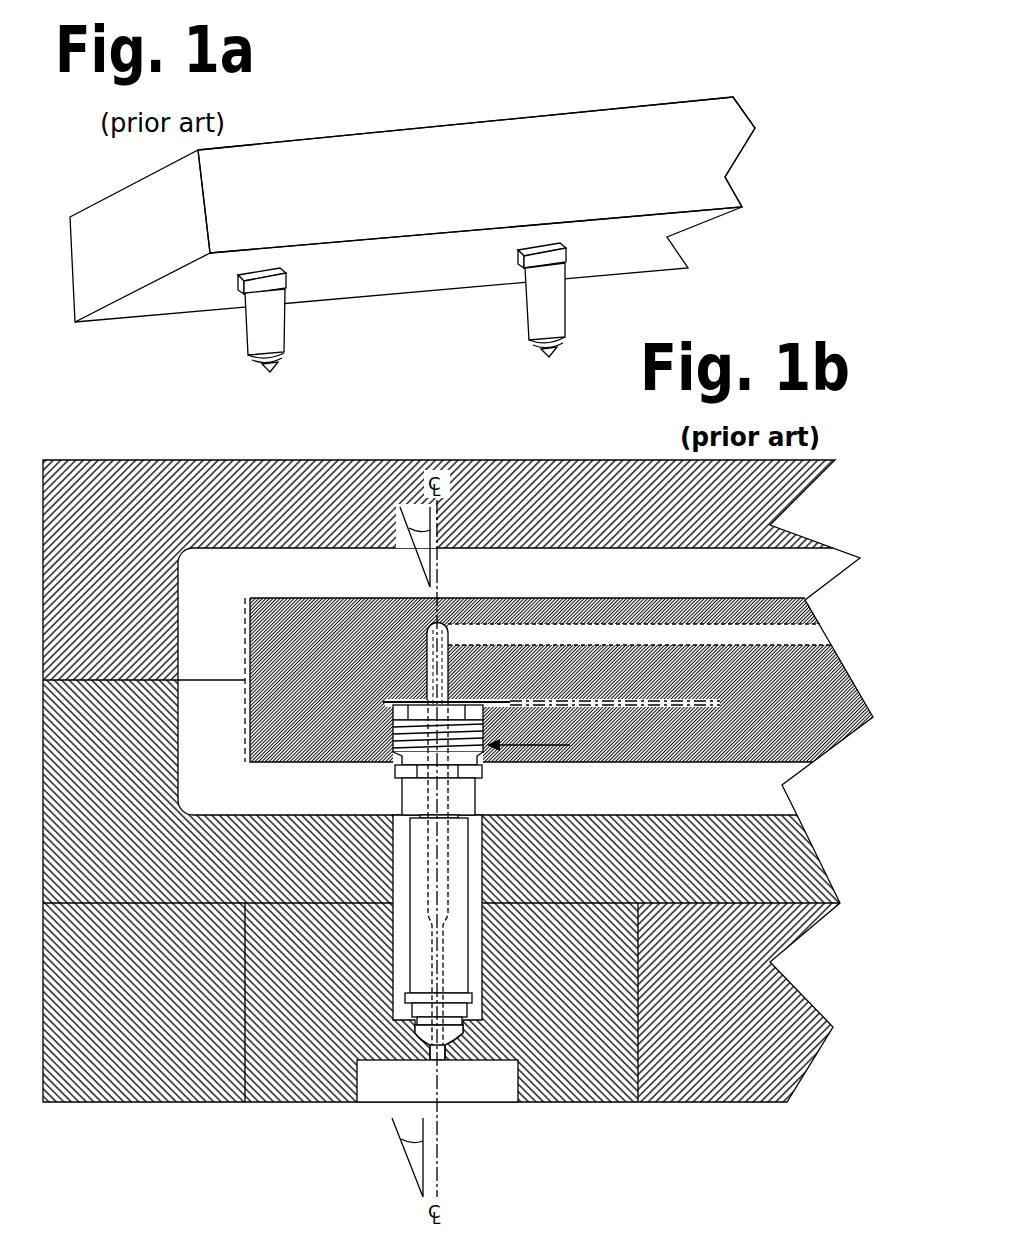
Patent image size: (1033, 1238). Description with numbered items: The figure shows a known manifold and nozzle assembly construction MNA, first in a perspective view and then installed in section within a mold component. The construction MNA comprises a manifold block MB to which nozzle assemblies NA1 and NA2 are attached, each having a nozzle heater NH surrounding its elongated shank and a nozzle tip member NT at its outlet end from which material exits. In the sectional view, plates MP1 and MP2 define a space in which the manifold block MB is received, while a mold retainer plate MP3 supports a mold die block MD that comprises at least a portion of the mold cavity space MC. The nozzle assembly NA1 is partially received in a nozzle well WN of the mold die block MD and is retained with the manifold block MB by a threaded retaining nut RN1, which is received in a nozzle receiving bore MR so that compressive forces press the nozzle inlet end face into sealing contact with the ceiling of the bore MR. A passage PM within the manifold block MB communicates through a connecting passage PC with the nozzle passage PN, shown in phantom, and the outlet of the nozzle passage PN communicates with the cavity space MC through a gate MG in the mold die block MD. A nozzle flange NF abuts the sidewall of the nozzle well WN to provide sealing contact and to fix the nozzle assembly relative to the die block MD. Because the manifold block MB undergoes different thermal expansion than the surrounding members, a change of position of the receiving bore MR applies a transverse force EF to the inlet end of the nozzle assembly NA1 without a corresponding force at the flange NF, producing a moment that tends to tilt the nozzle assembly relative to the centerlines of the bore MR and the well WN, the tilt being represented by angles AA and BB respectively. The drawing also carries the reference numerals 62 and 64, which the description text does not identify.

In FIG. 1A, the manifold and nozzle assembly construction MNA is at (464, 104).
In FIG. 1B, the manifold and nozzle assembly construction MNA is at (610, 580).
In FIG. 1A, the manifold block MB is at (641, 184).
In FIG. 1B, the manifold block MB is at (765, 734).
In FIG. 1A, the nozzle heater NH is at (281, 334).
In FIG. 1B, the nozzle heater NH is at (455, 872).
In FIG. 1A, the nozzle assembly NA1 is at (316, 333).
In FIG. 1A, the nozzle assembly NA2 is at (584, 300).
In FIG. 1A, the nozzle tip member NT is at (272, 372).
In FIG. 1B, the plate MP1 is at (130, 547).
In FIG. 1B, the plate MP2 is at (130, 769).
In FIG. 1B, the mold retainer plate MP3 is at (137, 974).
In FIG. 1B, the mold die block MD is at (293, 961).
In FIG. 1B, the mold cavity space MC is at (401, 1096).
In FIG. 1B, the manifold passage PM is at (767, 640).
In FIG. 1B, the connecting passage PC is at (445, 683).
In FIG. 1B, the angle AA is at (410, 518).
In FIG. 1B, the retaining nut RN1 is at (415, 735).
In FIG. 1B, the transverse force EF is at (562, 741).
In FIG. 1B, the nozzle receiving bore MR is at (393, 763).
In FIG. 1B, the nozzle passage PN is at (443, 850).
In FIG. 1B, the nozzle well WN is at (403, 937).
In FIG. 1B, the nozzle bore 62 is at (450, 960).
In FIG. 1B, the nozzle flange NF is at (422, 1031).
In FIG. 1B, the gate MG is at (442, 1068).
In FIG. 1B, the angle BB is at (412, 1140).
In FIG. 1B, the mold plate 64 is at (568, 1103).